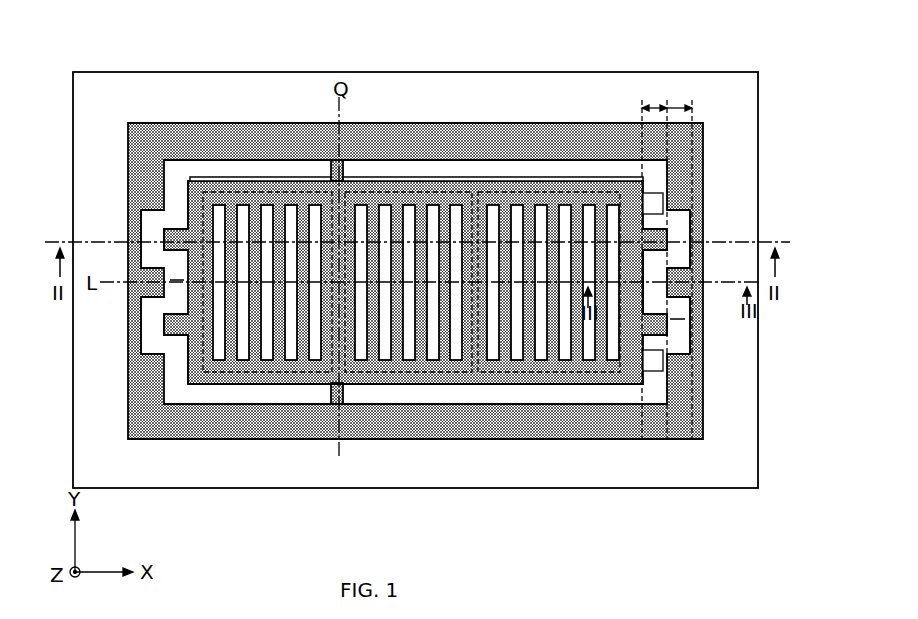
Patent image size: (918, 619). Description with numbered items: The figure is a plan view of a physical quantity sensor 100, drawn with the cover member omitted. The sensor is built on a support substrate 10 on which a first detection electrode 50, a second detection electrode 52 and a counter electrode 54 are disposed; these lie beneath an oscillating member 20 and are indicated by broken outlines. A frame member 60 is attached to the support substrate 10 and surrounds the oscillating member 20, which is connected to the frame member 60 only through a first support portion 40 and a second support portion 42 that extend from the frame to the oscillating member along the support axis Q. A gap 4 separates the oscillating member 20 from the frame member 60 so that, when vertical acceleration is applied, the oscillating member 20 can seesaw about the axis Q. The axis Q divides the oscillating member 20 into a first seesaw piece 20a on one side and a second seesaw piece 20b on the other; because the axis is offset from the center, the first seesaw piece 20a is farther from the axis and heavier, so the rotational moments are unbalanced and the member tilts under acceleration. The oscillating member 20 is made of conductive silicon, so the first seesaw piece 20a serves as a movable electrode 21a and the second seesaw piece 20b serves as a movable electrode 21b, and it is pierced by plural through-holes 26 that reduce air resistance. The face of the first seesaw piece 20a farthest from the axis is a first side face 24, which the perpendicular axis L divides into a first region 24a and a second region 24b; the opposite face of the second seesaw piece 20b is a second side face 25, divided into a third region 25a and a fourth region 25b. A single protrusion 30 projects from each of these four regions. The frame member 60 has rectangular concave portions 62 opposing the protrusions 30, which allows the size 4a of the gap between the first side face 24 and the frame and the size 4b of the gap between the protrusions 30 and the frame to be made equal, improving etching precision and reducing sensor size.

The physical quantity sensor 100 is at (426, 252).
The support substrate 10 is at (620, 85).
The frame member 60 is at (590, 135).
The concave portion 62 is at (150, 262).
The second side face 25 is at (419, 332).
The third region 25a is at (188, 210).
The fourth region 25b is at (188, 358).
The first side face 24 is at (645, 380).
The first region 24a is at (656, 205).
The second region 24b is at (656, 360).
The protrusion 30 is at (164, 237).
The oscillating member 20 is at (416, 131).
The first seesaw piece 20a is at (470, 176).
The second seesaw piece 20b is at (263, 176).
The first support portion 40 is at (331, 165).
The second support portion 42 is at (345, 393).
The movable electrode 21a is at (453, 373).
The movable electrode 21b is at (302, 373).
The first detection electrode 50 is at (415, 383).
The second detection electrode 52 is at (262, 382).
The counter electrode 54 is at (549, 337).
The through-hole 26 is at (590, 352).
The gap 4 is at (428, 288).
The size of gap 4a is at (653, 260).
The size of gap 4b is at (680, 260).